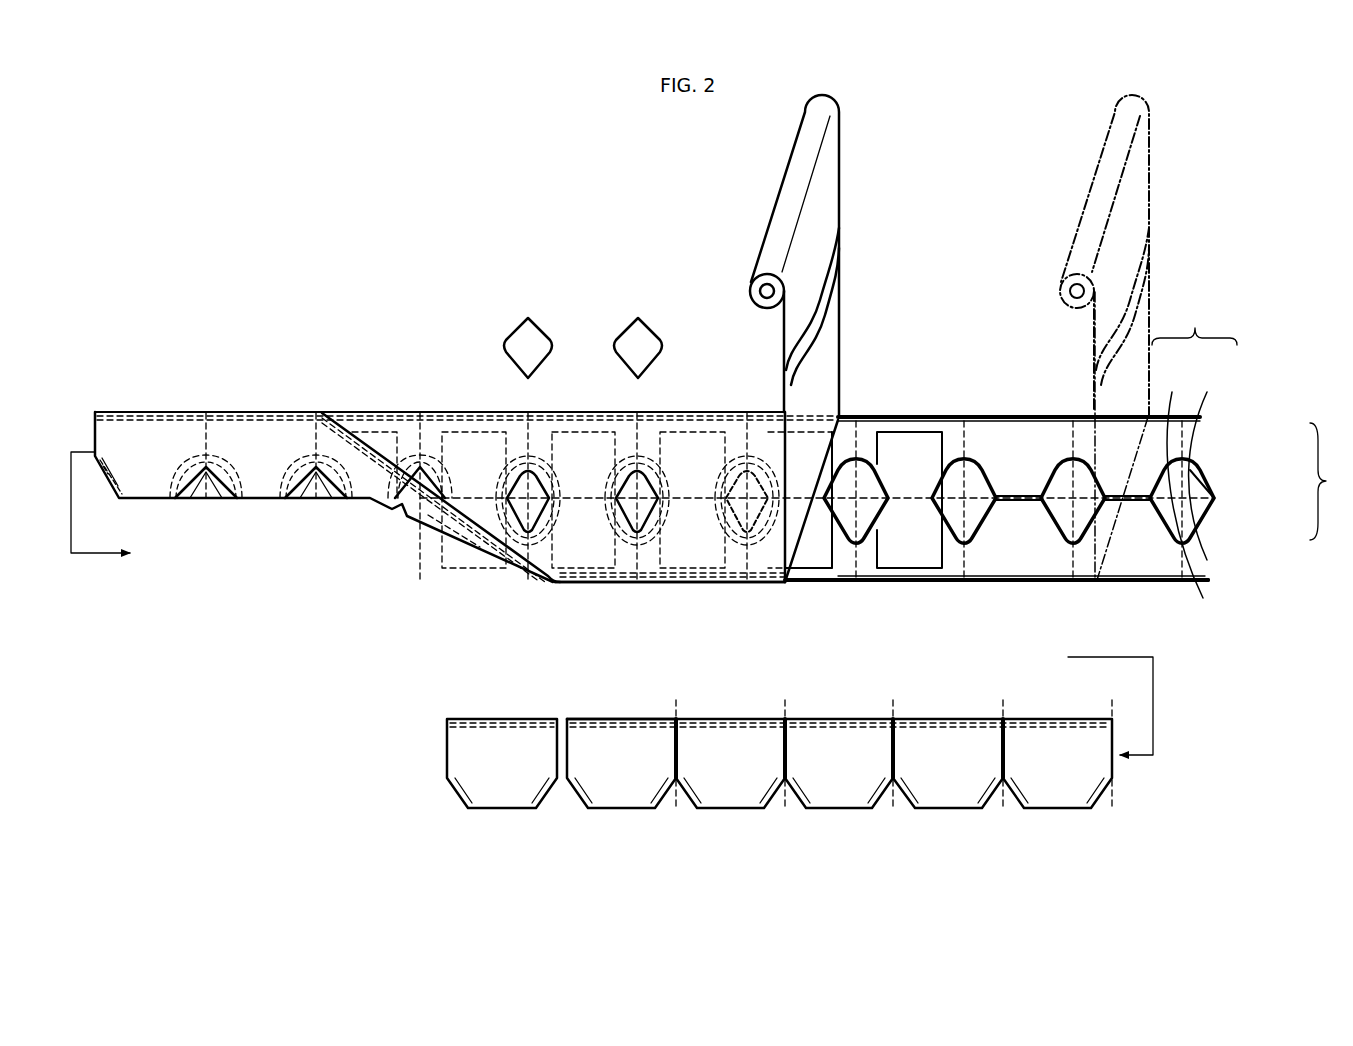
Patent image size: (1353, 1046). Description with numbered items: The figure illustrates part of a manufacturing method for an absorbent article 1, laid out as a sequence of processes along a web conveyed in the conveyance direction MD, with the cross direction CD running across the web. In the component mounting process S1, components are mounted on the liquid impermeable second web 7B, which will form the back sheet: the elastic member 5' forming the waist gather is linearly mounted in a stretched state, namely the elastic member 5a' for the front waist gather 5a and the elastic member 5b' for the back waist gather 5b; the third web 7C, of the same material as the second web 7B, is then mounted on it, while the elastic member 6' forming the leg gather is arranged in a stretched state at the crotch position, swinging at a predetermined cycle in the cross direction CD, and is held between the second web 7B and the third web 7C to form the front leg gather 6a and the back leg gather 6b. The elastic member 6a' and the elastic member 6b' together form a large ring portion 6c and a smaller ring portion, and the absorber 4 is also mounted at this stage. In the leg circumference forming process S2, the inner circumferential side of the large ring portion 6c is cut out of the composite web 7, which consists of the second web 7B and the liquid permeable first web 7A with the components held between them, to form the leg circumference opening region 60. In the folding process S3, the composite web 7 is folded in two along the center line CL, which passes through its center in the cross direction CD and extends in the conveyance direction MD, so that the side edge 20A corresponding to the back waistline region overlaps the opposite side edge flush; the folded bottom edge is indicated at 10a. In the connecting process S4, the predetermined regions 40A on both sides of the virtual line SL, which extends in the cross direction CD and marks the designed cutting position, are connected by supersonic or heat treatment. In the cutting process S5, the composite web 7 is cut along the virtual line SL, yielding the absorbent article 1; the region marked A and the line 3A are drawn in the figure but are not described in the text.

The absorbent article 1 is at (505, 718).
The cutting position / cutter line 3A is at (1124, 414).
The absorber 4 is at (920, 432).
The front waist gather 5a is at (1019, 385).
The back waist gather 5b is at (996, 612).
The elastic member 5a' is at (1234, 495).
The elastic member 5b' is at (1245, 486).
The elastic member 5' is at (1328, 481).
The front leg gather 6a is at (751, 448).
The back leg gather 6b is at (933, 561).
The large ring portion 6c is at (977, 545).
The elastic member 6' is at (1194, 323).
The elastic member 6a' is at (1208, 445).
The elastic member 6b' is at (1165, 429).
The composite web 7 is at (740, 412).
The first web 7A is at (825, 365).
The second web 7B is at (1172, 582).
The third web 7C is at (1135, 205).
The folded bottom edge 10a is at (600, 582).
The side edge 20A is at (586, 412).
The predetermined regions 40A is at (893, 735).
The leg circumference opening region 60 is at (522, 480).
The component mounting process S1 is at (1003, 272).
The leg circumference forming process S2 is at (590, 305).
The folding process S3 is at (399, 345).
The connecting process S4 is at (872, 828).
The cutting process S5 is at (566, 828).
The virtual line SL is at (317, 500).
The center line CL is at (1215, 498).
The cross direction CD is at (1285, 560).
The conveyance direction MD is at (720, 915).
The region A is at (74, 520).